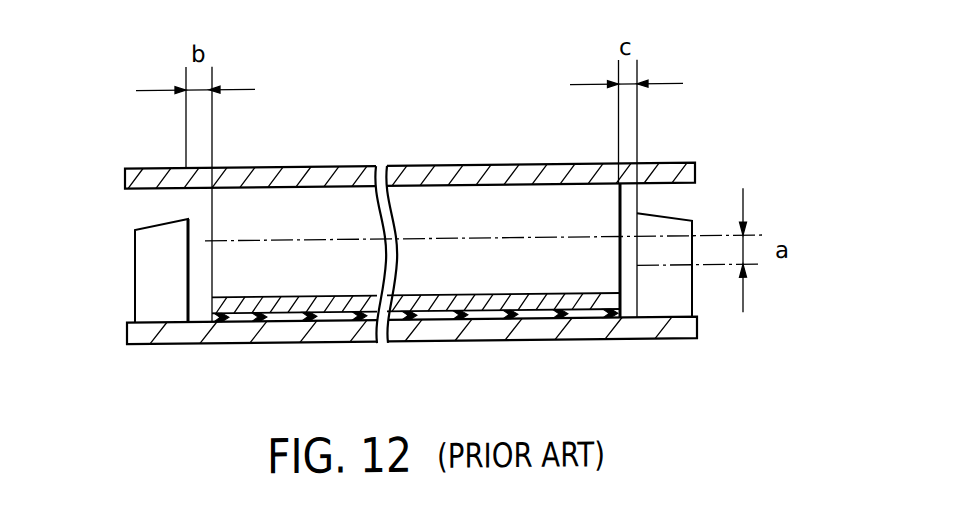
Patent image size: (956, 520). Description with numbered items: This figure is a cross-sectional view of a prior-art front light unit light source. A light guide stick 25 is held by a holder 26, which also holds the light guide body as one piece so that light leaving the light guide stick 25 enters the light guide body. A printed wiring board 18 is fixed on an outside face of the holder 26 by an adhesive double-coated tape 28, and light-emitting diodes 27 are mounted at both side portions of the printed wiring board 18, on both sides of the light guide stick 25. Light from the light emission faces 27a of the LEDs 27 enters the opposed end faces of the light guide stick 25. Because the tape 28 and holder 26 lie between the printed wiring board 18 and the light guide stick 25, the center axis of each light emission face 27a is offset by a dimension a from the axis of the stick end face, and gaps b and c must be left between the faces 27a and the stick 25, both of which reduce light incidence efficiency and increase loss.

The printed wiring board 18 is at (567, 340).
The light guide stick 25 is at (342, 201).
The holder 26 is at (498, 177).
The light-emitting diode 27 is at (148, 306).
The light emission face 27a is at (193, 304).
The adhesive double-coated tape 28 is at (487, 320).